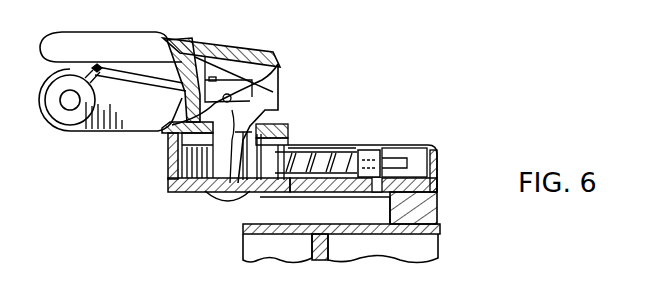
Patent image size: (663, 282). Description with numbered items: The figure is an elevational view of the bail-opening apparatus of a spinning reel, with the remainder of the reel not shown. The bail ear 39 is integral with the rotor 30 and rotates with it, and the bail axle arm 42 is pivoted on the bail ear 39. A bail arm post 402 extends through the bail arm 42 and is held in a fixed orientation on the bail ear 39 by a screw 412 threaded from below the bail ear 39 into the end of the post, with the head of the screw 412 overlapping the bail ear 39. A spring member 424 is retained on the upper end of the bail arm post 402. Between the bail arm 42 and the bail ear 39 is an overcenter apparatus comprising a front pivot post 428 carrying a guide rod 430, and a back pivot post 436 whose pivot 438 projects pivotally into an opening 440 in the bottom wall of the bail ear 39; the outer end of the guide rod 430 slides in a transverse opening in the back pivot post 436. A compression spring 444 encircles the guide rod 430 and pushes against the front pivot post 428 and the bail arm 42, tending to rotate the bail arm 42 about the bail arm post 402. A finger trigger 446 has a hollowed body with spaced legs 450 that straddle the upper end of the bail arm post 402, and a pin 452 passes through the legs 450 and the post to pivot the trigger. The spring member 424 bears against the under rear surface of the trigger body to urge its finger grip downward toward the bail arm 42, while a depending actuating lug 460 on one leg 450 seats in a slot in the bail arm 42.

The rotor 30 is at (438, 236).
The bail ear 39 is at (170, 189).
The bail axle arm 42 is at (122, 131).
The bail arm post 402 is at (193, 37).
The screw 412 is at (220, 204).
The spring member 424 is at (260, 76).
The front pivot post 428 is at (260, 192).
The guide rod 430 is at (327, 160).
The back pivot post 436 is at (380, 150).
The pivot 438 is at (377, 192).
The opening 440 is at (372, 182).
The compression spring 444 is at (302, 150).
The finger trigger 446 is at (116, 46).
The spaced legs 450 is at (288, 150).
The pin 452 is at (165, 131).
The actuating lug 460 is at (198, 192).